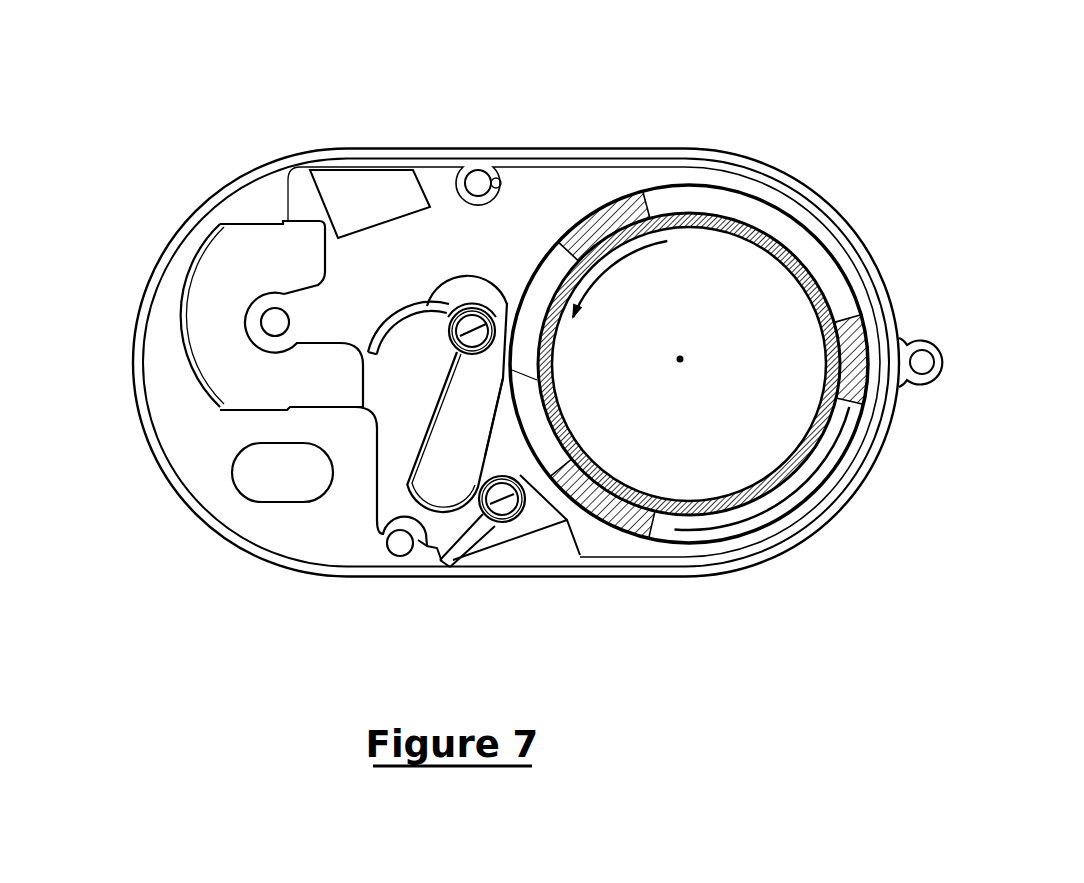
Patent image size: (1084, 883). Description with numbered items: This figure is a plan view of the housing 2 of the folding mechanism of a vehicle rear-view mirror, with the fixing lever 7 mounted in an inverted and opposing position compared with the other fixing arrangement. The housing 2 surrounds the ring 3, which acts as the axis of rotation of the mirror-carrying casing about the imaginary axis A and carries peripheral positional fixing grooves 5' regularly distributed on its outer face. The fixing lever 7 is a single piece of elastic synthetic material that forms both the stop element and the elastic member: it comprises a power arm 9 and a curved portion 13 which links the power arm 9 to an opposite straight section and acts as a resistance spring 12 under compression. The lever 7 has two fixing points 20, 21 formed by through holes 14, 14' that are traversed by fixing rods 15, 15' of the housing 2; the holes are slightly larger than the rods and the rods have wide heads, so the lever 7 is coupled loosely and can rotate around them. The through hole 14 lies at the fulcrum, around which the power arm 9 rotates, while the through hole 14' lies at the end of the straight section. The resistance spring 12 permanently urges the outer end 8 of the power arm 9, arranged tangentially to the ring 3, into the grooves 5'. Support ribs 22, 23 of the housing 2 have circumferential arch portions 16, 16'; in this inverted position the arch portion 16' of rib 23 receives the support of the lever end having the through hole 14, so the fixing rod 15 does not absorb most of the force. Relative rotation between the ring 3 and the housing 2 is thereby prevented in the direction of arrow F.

The housing 2 is at (236, 165).
The ring 3 is at (847, 320).
The drum ring 5' is at (694, 323).
The fixing lever 7 is at (395, 440).
The outer end of the power arm 8 is at (502, 427).
The power arm 9 is at (512, 399).
The resistance spring 12 is at (430, 398).
The curved portion 13 is at (437, 540).
The through hole 14 is at (509, 557).
The through hole 14' is at (471, 182).
The fixing rod 15 is at (408, 178).
The fixing rod 15' is at (464, 585).
The circumferential arch portion 16 is at (514, 148).
The circumferential arch portion 16' is at (596, 555).
The fixing point 20 is at (490, 290).
The fixing point 21 is at (528, 508).
The support rib 22 is at (385, 301).
The support rib 23 is at (403, 552).
The imaginary axis A is at (702, 363).
The arrow F is at (620, 280).